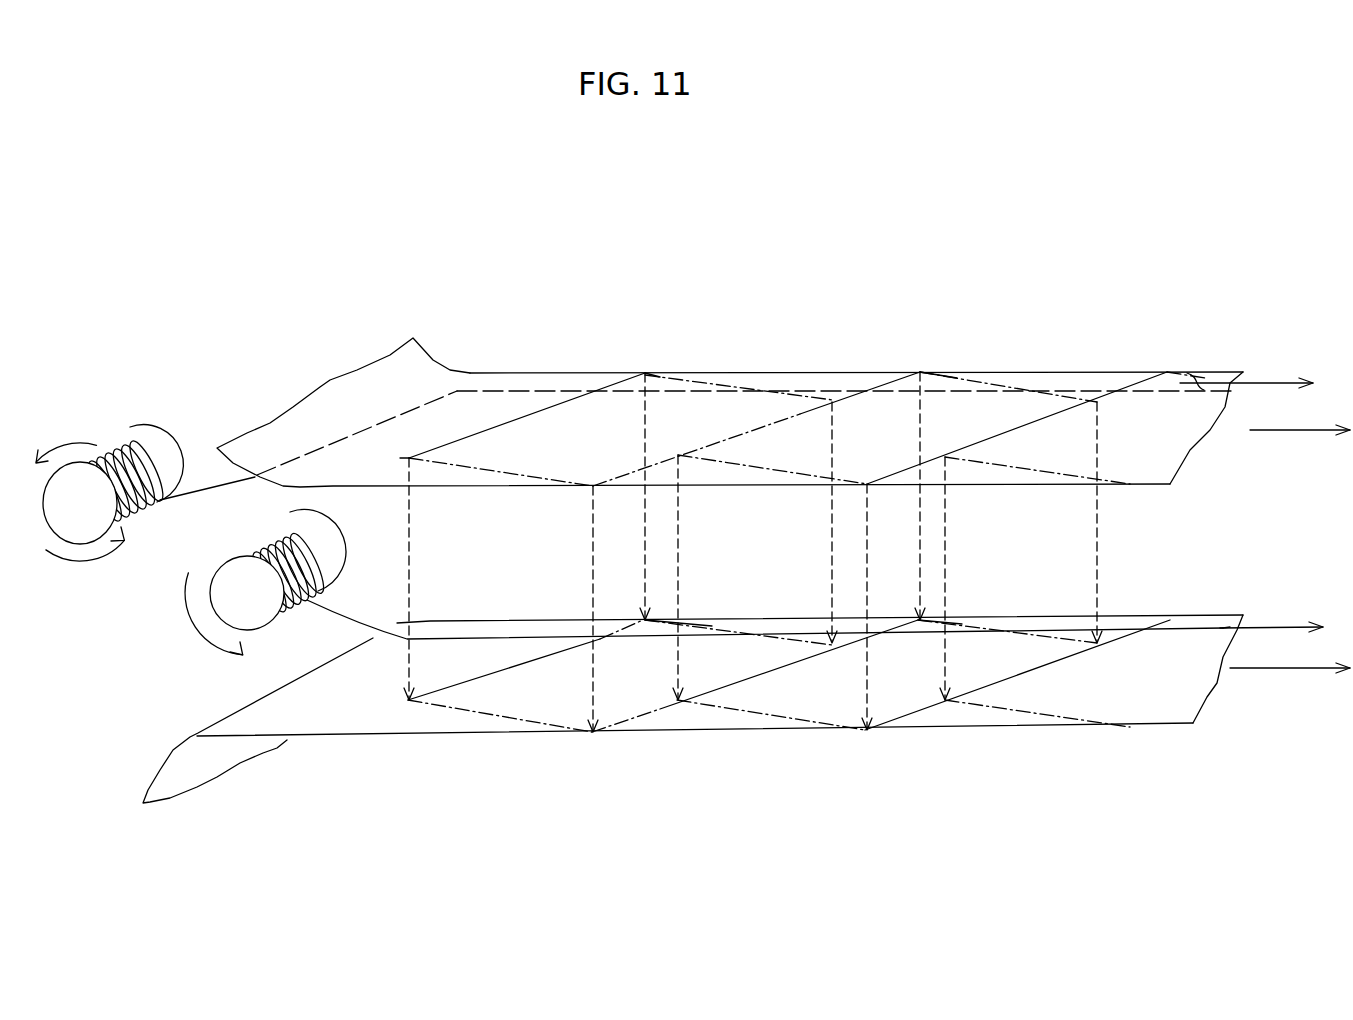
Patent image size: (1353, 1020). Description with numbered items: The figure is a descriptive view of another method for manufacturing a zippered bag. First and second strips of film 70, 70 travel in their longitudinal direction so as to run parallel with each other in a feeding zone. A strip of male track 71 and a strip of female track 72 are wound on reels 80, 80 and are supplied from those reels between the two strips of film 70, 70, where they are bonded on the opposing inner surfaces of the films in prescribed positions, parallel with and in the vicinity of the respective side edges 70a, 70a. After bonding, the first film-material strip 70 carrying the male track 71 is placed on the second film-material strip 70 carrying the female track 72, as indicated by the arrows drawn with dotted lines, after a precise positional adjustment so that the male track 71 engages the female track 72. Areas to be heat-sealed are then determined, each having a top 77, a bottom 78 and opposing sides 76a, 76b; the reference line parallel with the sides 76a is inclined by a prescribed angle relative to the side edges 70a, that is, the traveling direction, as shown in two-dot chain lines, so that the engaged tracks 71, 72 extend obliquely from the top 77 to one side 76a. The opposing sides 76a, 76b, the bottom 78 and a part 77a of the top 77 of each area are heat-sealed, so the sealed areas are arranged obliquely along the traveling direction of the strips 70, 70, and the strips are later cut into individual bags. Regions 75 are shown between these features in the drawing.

The strip of film 70 is at (693, 536).
The side edge 70a is at (820, 438).
The strip of male track 71 is at (846, 326).
The strip of female track 72 is at (733, 630).
The flat tooth surface 75 is at (1160, 765).
The opposing side 76a is at (1002, 744).
The opposing side 76b is at (622, 472).
The top 77 is at (871, 466).
The part of the top 77a is at (925, 447).
The bottom 78 is at (487, 468).
The reel 80 is at (191, 502).